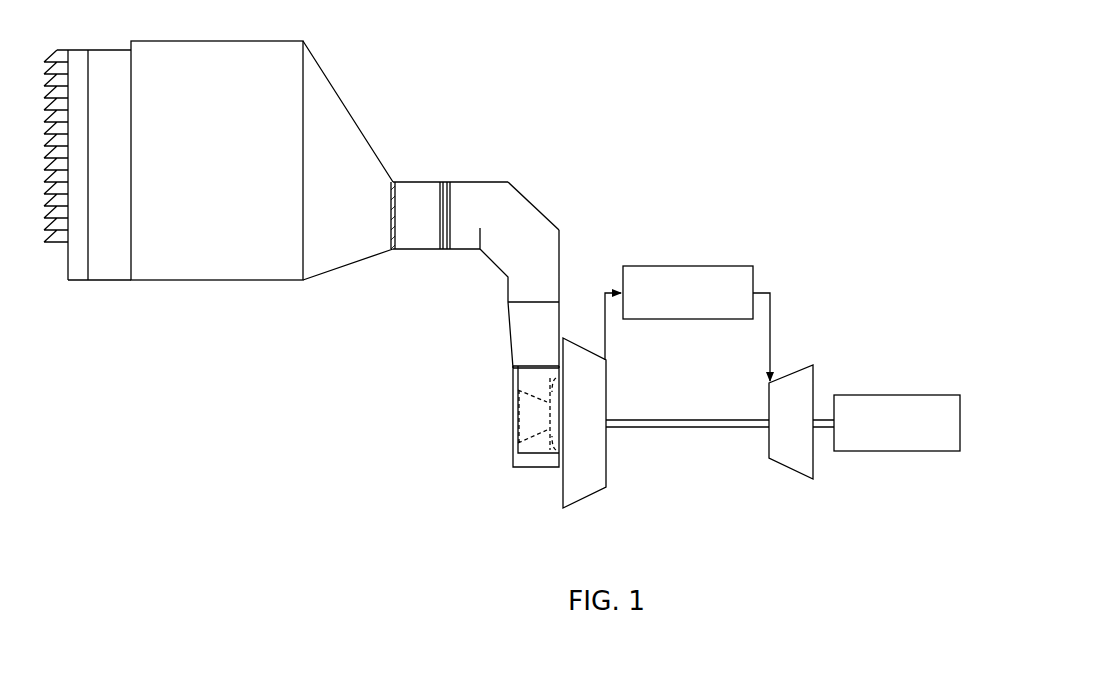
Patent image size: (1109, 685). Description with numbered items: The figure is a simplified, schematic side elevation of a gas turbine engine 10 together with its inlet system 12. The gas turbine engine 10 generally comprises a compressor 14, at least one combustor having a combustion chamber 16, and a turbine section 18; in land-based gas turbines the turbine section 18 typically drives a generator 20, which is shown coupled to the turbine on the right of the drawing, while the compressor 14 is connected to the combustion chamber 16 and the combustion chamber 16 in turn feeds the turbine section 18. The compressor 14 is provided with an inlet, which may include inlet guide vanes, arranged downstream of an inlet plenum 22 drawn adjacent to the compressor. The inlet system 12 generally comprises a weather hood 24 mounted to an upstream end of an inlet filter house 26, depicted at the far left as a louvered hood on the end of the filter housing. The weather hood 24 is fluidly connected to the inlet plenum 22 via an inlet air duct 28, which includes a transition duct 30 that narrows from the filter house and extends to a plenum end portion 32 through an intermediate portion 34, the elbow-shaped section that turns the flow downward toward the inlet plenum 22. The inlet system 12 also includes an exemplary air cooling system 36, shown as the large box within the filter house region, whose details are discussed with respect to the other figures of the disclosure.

The gas turbine engine 10 is at (785, 70).
The inlet system 12 is at (419, 272).
The compressor 14 is at (588, 488).
The combustion chamber 16 is at (688, 265).
The turbine section 18 is at (788, 376).
The generator 20 is at (890, 394).
The inlet plenum 22 is at (513, 369).
The weather hood 24 is at (52, 247).
The inlet filter house 26 is at (110, 282).
The inlet air duct 28 is at (528, 188).
The transition duct 30 is at (345, 108).
The plenum end portion 32 is at (560, 318).
The intermediate portion 34 is at (532, 215).
The air cooling system 36 is at (228, 168).